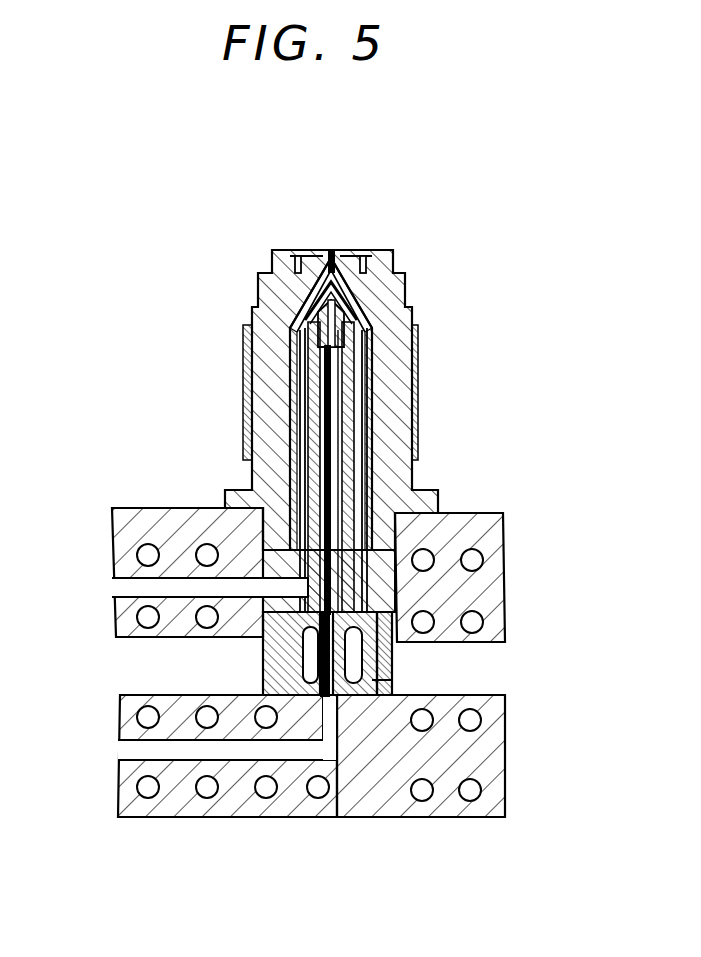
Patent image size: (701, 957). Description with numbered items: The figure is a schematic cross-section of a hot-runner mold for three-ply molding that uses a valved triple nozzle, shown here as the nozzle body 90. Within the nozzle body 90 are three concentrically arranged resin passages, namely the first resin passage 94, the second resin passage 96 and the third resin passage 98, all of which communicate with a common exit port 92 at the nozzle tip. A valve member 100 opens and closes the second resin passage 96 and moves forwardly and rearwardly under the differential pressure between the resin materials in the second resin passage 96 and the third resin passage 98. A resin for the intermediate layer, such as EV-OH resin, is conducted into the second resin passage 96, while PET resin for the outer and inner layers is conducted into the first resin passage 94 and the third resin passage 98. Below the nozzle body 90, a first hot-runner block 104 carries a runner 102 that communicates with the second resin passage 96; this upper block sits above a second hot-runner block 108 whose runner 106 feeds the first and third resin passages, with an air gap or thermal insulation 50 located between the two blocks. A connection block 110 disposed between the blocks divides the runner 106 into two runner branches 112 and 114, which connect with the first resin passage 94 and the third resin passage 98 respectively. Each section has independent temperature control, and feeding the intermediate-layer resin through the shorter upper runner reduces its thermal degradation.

The air gap or thermal insulation 50 is at (415, 672).
The nozzle body 90 is at (407, 282).
The common exit port 92 is at (336, 253).
The first resin passage 94 is at (290, 337).
The second resin passage 96 is at (297, 380).
The third resin passage 98 is at (330, 407).
The valve member 100 is at (292, 302).
The runner 102 is at (130, 585).
The first hot-runner block 104 is at (482, 588).
The runner 106 is at (130, 753).
The second hot-runner block 108 is at (487, 758).
The connection block 110 is at (390, 655).
The runner branch 112 is at (330, 663).
The runner branch 114 is at (390, 684).